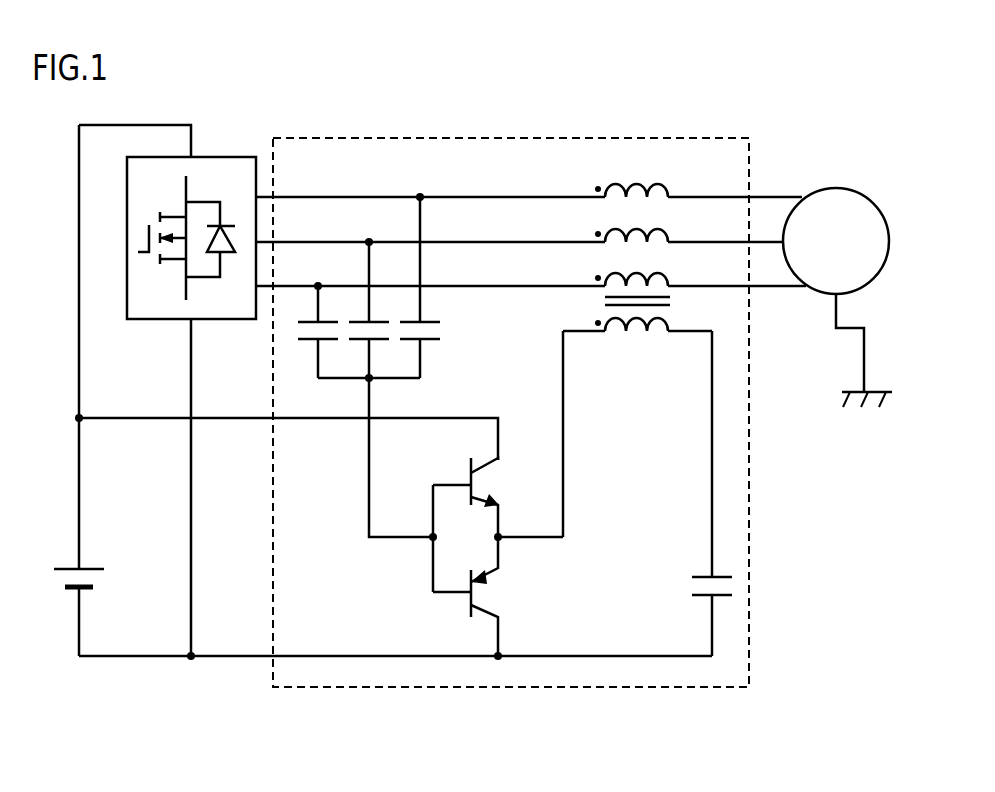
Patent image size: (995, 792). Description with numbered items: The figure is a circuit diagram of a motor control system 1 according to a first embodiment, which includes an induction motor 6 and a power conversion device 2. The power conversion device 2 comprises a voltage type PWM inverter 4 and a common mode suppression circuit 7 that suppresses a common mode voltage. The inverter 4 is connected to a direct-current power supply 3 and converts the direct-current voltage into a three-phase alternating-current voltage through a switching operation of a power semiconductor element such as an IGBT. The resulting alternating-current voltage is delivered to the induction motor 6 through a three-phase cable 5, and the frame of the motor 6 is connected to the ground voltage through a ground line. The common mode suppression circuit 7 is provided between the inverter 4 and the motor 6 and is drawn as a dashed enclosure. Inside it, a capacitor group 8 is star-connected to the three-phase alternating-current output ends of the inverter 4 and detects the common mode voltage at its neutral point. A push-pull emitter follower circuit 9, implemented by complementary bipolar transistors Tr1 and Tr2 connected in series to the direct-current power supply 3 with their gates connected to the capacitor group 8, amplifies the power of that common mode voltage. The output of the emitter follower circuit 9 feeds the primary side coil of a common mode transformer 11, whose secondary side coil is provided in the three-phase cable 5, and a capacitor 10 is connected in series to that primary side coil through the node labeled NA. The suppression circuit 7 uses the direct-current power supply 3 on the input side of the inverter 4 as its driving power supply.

The motor control system 1 is at (753, 82).
The power conversion device 2 is at (542, 371).
The direct-current power supply 3 is at (95, 567).
The voltage type PWM inverter 4 is at (228, 155).
The three-phase cable 5 is at (777, 188).
The induction motor 6 is at (873, 198).
The common mode suppression circuit 7 is at (665, 135).
The capacitor group 8 is at (311, 351).
The push-pull emitter follower circuit 9 is at (466, 517).
The capacitor 10 is at (728, 587).
The common mode transformer 11 is at (578, 300).
The bipolar transistor Tr1 is at (492, 482).
The bipolar transistor Tr2 is at (492, 592).
The node NA is at (712, 501).